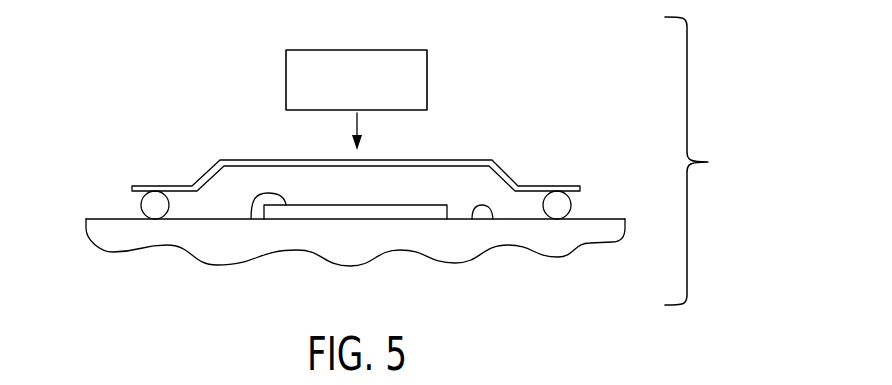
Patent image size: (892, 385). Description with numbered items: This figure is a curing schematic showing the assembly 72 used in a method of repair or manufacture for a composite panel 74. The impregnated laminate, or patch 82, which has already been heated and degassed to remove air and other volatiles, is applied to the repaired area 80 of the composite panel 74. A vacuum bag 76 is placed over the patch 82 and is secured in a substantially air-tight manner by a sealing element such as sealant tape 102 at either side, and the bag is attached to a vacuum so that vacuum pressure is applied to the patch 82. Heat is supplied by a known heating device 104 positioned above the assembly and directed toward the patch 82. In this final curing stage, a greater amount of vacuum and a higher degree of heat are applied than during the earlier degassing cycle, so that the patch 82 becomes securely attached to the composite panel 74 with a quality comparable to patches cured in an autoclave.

The assembly 72 is at (539, 82).
The composite panel 74 is at (117, 243).
The vacuum bag 76 is at (510, 172).
The repaired area 80 is at (492, 219).
The impregnated laminate 82 is at (251, 219).
The sealant tape 102 is at (137, 203).
The heating device 104 is at (385, 50).